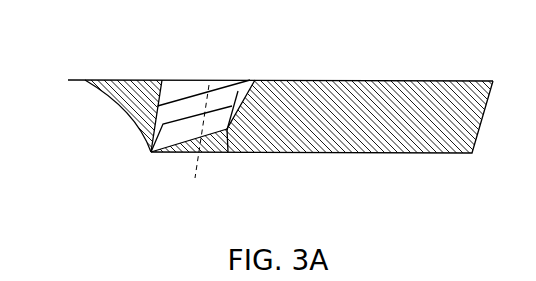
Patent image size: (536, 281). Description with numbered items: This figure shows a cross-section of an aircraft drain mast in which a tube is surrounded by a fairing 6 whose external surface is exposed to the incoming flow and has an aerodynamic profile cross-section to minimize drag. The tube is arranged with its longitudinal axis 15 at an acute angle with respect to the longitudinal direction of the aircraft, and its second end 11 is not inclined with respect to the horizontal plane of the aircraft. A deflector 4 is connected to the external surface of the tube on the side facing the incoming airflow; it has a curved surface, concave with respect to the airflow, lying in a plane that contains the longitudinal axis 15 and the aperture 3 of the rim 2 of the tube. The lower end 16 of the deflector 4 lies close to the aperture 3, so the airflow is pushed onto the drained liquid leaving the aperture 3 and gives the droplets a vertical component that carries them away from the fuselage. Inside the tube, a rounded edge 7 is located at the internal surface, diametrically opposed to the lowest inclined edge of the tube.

The rim 2 is at (255, 80).
The aperture 3 is at (150, 152).
The deflector 4 is at (108, 96).
The fairing 6 is at (385, 132).
The rounded edge 7 is at (228, 152).
The second end 11 is at (163, 158).
The longitudinal axis 15 is at (210, 78).
The lower end 16 is at (150, 152).